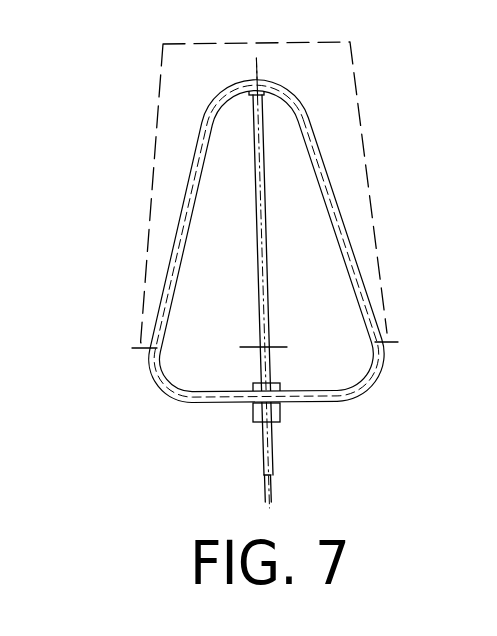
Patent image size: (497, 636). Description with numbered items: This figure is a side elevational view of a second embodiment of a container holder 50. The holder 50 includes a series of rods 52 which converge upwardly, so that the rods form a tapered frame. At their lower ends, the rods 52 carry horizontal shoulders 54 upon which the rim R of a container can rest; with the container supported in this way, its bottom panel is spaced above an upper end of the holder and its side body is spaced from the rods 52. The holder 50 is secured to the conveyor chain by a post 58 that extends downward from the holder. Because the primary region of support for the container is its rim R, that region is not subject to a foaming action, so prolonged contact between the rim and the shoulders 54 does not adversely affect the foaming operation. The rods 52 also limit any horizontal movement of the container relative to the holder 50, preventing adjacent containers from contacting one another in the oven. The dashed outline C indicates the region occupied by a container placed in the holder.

The holder 50 is at (366, 394).
The rods 52 is at (326, 183).
The horizontal shoulders 54 is at (140, 352).
The post 58 is at (270, 445).
The region C is at (366, 104).
The rim R is at (135, 336).